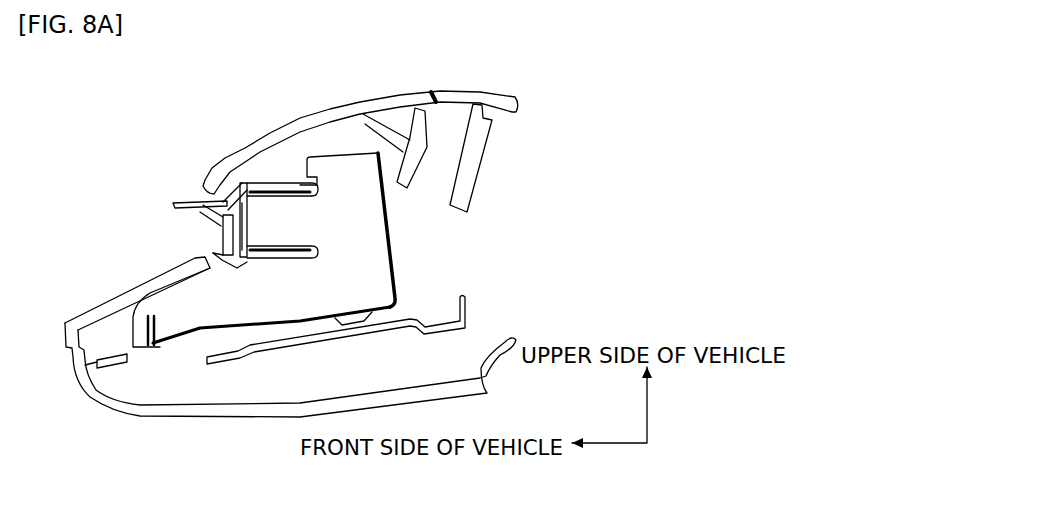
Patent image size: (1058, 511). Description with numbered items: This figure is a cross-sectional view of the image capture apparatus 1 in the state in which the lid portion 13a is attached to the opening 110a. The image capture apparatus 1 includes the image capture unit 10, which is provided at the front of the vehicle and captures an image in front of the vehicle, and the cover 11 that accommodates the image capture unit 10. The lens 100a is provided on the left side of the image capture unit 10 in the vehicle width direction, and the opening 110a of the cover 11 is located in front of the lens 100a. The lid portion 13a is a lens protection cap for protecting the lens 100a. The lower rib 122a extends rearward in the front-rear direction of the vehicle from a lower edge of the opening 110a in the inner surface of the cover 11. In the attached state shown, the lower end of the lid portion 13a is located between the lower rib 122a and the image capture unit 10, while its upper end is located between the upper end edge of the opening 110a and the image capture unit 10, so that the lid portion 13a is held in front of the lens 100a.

The image capture apparatus 1 is at (85, 86).
The image capture unit 10 is at (347, 177).
The cover 11 is at (282, 128).
The lid portion 13a is at (176, 204).
The lens 100a is at (213, 196).
The opening 110a is at (206, 187).
The lower rib 122a is at (198, 258).